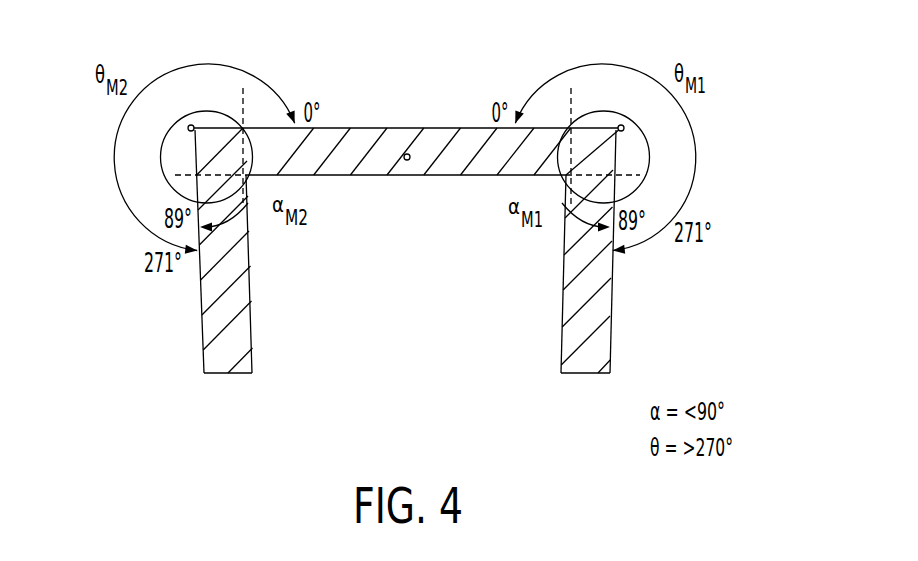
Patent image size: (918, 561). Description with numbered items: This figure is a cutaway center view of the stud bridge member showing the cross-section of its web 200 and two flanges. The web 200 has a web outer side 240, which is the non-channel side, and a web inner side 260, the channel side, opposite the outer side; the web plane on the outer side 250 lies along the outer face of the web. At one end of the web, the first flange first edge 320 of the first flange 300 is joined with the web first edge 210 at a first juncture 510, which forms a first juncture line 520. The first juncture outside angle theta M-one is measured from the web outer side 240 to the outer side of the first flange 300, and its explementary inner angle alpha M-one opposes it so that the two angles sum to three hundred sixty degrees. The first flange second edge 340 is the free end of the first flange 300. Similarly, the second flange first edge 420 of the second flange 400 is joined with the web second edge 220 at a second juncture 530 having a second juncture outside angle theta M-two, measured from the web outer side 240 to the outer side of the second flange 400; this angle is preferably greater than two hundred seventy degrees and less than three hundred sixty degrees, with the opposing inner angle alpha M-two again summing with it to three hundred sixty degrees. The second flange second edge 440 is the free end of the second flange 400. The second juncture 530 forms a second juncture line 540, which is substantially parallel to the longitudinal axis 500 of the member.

The web 200 is at (357, 148).
The web first edge 210 is at (552, 177).
The web second edge 220 is at (238, 180).
The web outer side 240 is at (466, 117).
The web plane on the outer side 250 is at (423, 128).
The web inner side 260 is at (361, 190).
The first flange 300 is at (582, 355).
The first flange first edge 320 is at (565, 210).
The first flange second edge 340 is at (612, 372).
The second flange 400 is at (230, 355).
The second flange first edge 420 is at (245, 217).
The second flange second edge 440 is at (202, 375).
The longitudinal axis 500 is at (409, 160).
The first juncture 510 is at (595, 110).
The first juncture line 520 is at (621, 129).
The second juncture 530 is at (203, 110).
The second juncture line 540 is at (191, 129).